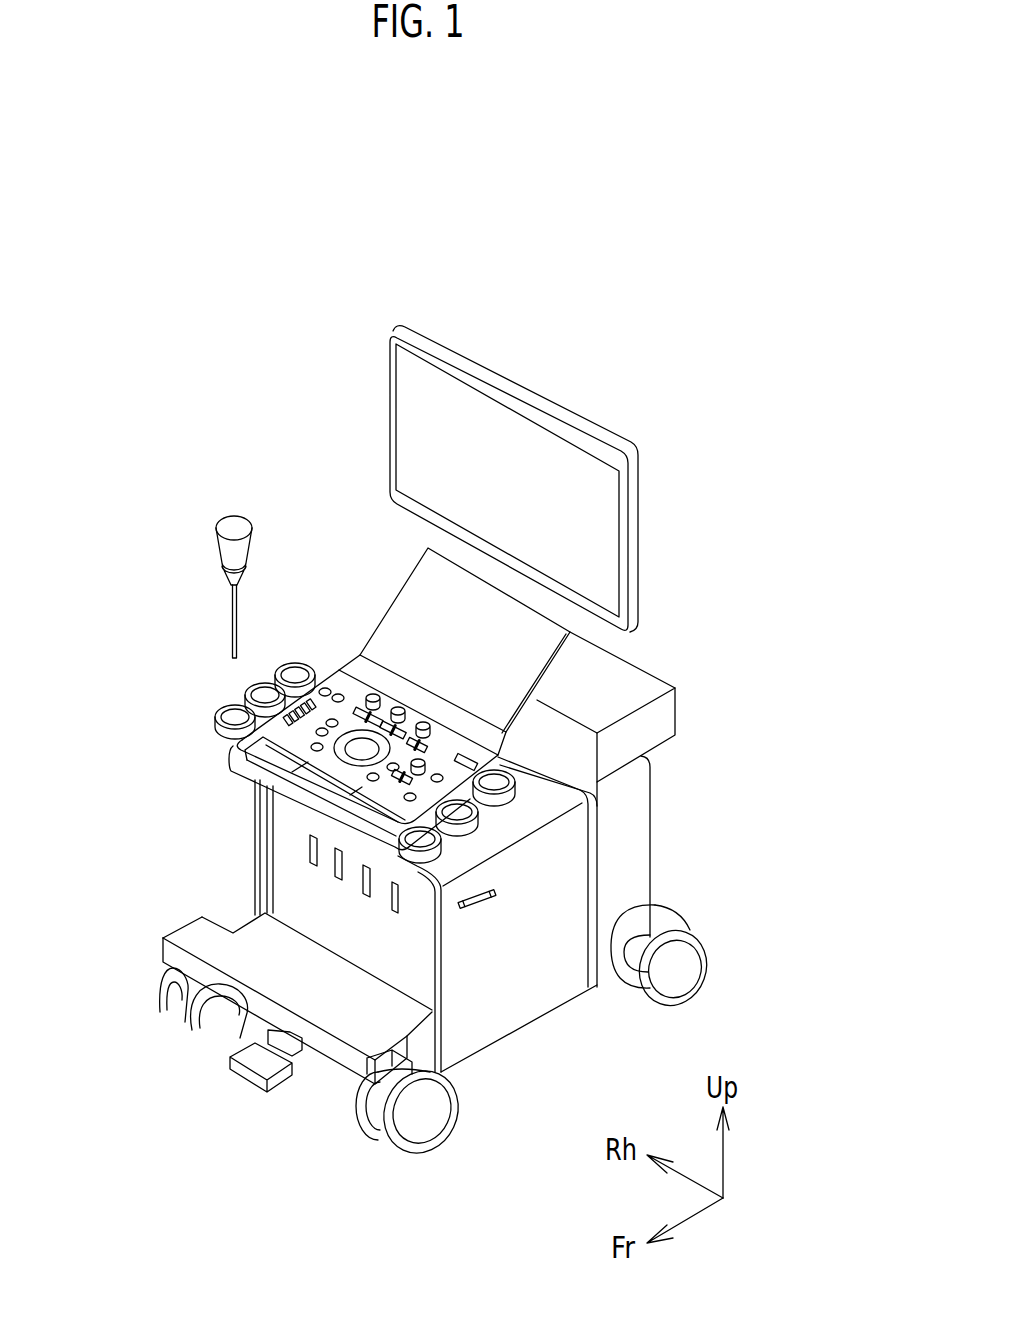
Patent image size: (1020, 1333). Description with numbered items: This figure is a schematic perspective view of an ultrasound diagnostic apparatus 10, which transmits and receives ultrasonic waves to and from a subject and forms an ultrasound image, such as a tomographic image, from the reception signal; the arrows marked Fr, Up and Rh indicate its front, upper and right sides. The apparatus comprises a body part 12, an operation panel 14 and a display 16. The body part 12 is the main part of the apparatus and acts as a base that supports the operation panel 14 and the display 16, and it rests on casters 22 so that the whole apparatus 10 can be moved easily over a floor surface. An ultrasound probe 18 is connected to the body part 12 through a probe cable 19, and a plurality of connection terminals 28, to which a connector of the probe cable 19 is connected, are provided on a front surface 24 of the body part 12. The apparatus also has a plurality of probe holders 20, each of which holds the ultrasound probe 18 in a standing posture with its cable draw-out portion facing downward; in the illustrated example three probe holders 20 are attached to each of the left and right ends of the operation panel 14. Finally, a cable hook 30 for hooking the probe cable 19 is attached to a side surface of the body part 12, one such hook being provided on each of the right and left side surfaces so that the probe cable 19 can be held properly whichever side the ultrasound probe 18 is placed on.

The ultrasound diagnostic apparatus 10 is at (523, 360).
The body part 12 is at (523, 990).
The operation panel 14 is at (405, 620).
The display 16 is at (590, 433).
The ultrasound probe 18 is at (233, 520).
The probe cable 19 is at (232, 623).
The probe holder 20 is at (477, 820).
The caster 22 is at (168, 1010).
The front surface 24 is at (403, 947).
The connection terminal 28 is at (338, 870).
The cable hook 30 is at (470, 918).